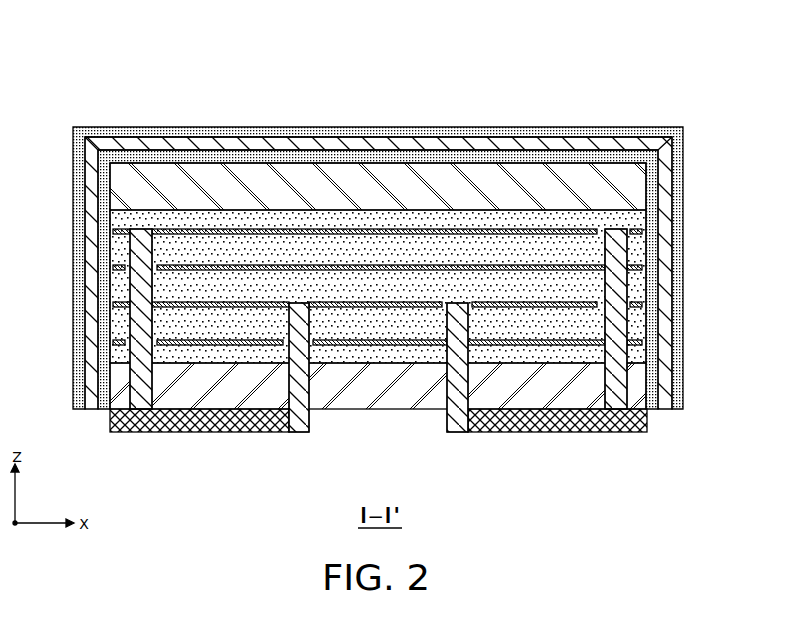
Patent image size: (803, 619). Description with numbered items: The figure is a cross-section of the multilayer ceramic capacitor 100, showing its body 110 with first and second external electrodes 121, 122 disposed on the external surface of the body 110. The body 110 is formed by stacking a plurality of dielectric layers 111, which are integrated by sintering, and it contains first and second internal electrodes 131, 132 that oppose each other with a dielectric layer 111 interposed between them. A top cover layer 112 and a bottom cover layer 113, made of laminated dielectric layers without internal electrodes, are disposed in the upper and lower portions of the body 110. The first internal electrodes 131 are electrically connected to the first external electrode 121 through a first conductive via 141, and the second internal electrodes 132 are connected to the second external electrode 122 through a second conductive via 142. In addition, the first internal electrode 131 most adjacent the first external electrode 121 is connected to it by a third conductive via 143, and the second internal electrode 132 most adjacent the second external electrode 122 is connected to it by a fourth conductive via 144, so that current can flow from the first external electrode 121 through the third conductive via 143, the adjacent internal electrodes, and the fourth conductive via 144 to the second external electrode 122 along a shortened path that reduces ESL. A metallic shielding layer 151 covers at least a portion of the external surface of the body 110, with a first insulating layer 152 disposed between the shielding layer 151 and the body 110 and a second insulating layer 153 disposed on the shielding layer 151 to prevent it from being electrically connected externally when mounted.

The multilayer ceramic capacitor 100 is at (175, 47).
The body 110 is at (401, 244).
The dielectric layer 111 is at (633, 246).
The top cover layer 112 is at (633, 182).
The bottom cover layer 113 is at (587, 380).
The first external electrode 121 is at (177, 422).
The second external electrode 122 is at (583, 422).
The first internal electrode 131 is at (240, 229).
The second internal electrode 132 is at (285, 266).
The first conductive via 141 is at (140, 287).
The second conductive via 142 is at (615, 287).
The third conductive via 143 is at (300, 397).
The fourth conductive via 144 is at (465, 405).
The shielding layer 151 is at (605, 143).
The first insulating layer 152 is at (587, 155).
The second insulating layer 153 is at (643, 133).